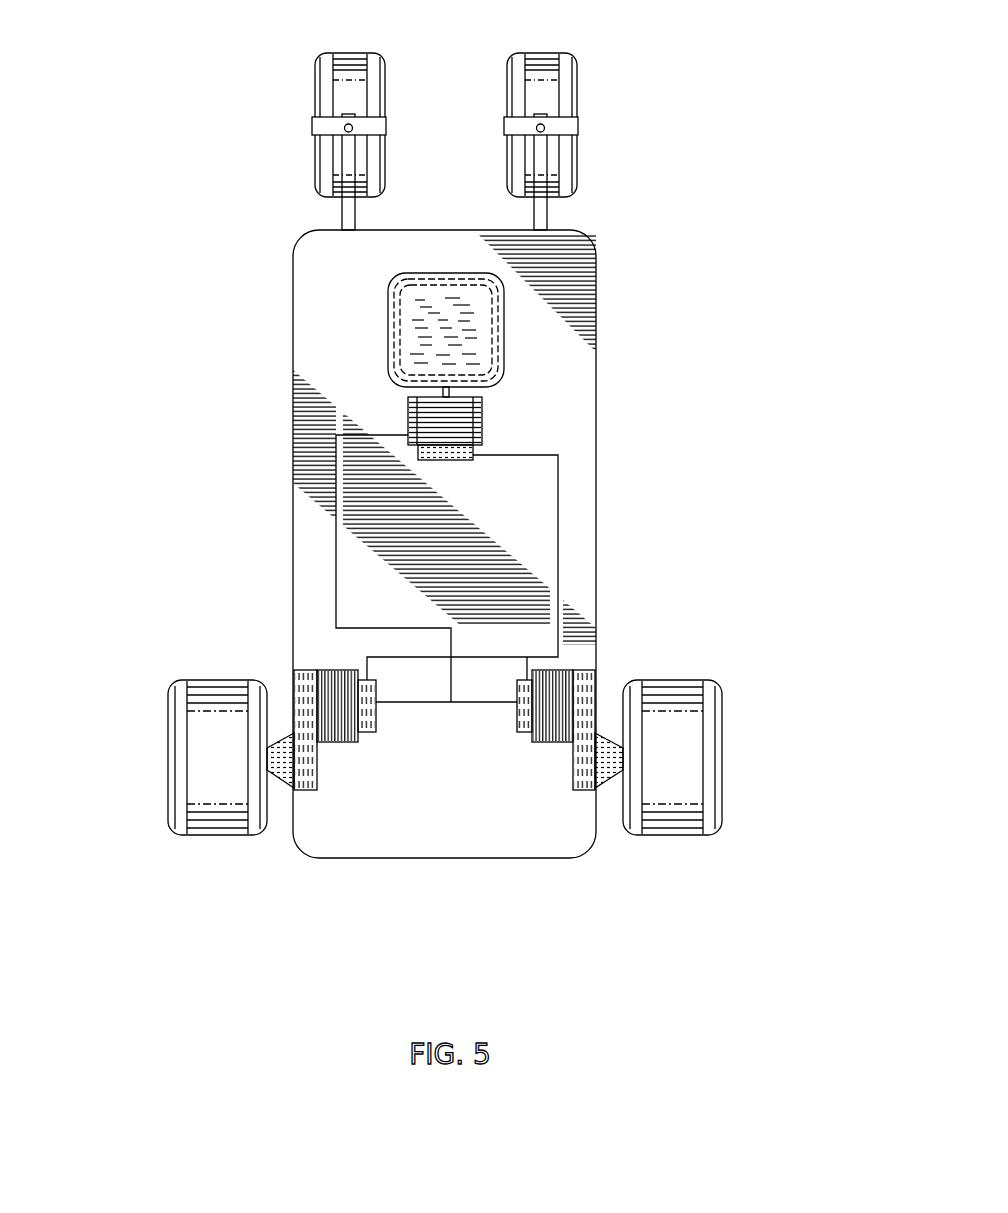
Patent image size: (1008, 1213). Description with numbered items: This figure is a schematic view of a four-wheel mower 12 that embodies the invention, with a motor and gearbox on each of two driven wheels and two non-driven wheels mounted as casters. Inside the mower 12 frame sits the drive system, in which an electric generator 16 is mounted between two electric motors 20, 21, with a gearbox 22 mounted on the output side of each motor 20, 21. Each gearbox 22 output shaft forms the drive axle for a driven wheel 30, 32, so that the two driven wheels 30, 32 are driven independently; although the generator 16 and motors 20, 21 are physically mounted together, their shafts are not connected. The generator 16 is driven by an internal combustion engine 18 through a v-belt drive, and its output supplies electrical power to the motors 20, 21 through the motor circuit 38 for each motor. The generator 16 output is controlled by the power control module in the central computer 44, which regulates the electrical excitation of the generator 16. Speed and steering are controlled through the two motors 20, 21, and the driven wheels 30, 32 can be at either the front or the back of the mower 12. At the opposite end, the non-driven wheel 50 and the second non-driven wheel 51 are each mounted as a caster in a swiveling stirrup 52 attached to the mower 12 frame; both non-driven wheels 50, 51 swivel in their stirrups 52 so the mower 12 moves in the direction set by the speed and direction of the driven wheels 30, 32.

The mower 12 is at (318, 243).
The electric generator 16 is at (482, 418).
The internal combustion engine 18 is at (390, 308).
The electric motor 20 is at (333, 670).
The electric motor 21 is at (560, 670).
The gearbox 22 is at (300, 792).
The driven wheel 30 is at (225, 835).
The driven wheel 32 is at (673, 835).
The motor circuit 38 is at (368, 702).
The central computer 44 is at (478, 452).
The non-driven wheel 50 is at (348, 53).
The second non-driven wheel 51 is at (525, 53).
The swiveling stirrup 52 is at (312, 127).